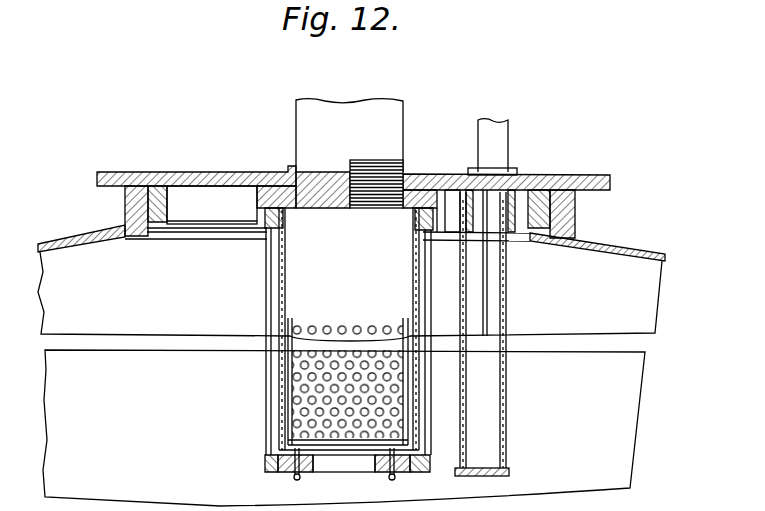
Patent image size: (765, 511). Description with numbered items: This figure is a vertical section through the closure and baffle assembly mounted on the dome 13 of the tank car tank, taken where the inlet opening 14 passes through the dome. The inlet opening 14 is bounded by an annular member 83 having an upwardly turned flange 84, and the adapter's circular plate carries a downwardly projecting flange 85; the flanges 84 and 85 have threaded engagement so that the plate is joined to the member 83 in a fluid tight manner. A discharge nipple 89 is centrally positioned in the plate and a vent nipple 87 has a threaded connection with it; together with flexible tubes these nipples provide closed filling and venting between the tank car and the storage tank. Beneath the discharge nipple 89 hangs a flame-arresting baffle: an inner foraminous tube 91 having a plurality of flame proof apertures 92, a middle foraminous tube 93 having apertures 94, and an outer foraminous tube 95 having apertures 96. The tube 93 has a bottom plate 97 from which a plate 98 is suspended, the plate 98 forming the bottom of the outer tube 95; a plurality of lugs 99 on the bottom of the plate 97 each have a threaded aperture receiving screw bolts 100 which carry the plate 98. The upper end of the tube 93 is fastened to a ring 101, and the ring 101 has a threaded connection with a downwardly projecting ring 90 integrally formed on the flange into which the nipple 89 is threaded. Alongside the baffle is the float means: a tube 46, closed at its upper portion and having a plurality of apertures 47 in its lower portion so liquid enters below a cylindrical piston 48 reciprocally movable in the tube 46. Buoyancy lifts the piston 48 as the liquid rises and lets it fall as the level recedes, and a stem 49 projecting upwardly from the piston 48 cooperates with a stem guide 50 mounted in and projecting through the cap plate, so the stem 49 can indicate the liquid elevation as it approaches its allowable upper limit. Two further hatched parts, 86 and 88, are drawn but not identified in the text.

The dome 13 is at (645, 252).
The inlet opening 14 is at (186, 200).
The tube 46 is at (503, 422).
The apertures 47 is at (503, 448).
The cylindrical piston 48 is at (502, 394).
The stem 49 is at (487, 323).
The stem guide 50 is at (492, 242).
The annular member 83 is at (603, 238).
The upwardly turned flange 84 is at (572, 218).
The downwardly projecting flange 85 is at (547, 244).
The bushing block 86 is at (517, 192).
The vent nipple 87 is at (503, 140).
The cover plate 88 is at (210, 172).
The discharge nipple 89 is at (387, 112).
The downwardly projecting ring 90 is at (262, 208).
The inner foraminous tube 91 is at (293, 283).
The flame proof apertures 92 is at (293, 330).
The middle foraminous tube 93 is at (420, 405).
The apertures 94 is at (412, 474).
The outer foraminous tube 95 is at (267, 381).
The apertures 96 is at (267, 275).
The bottom plate 97 is at (383, 475).
The plate 98 is at (327, 474).
The lugs 99 is at (266, 473).
The screw bolts 100 is at (298, 480).
The ring 101 is at (257, 233).